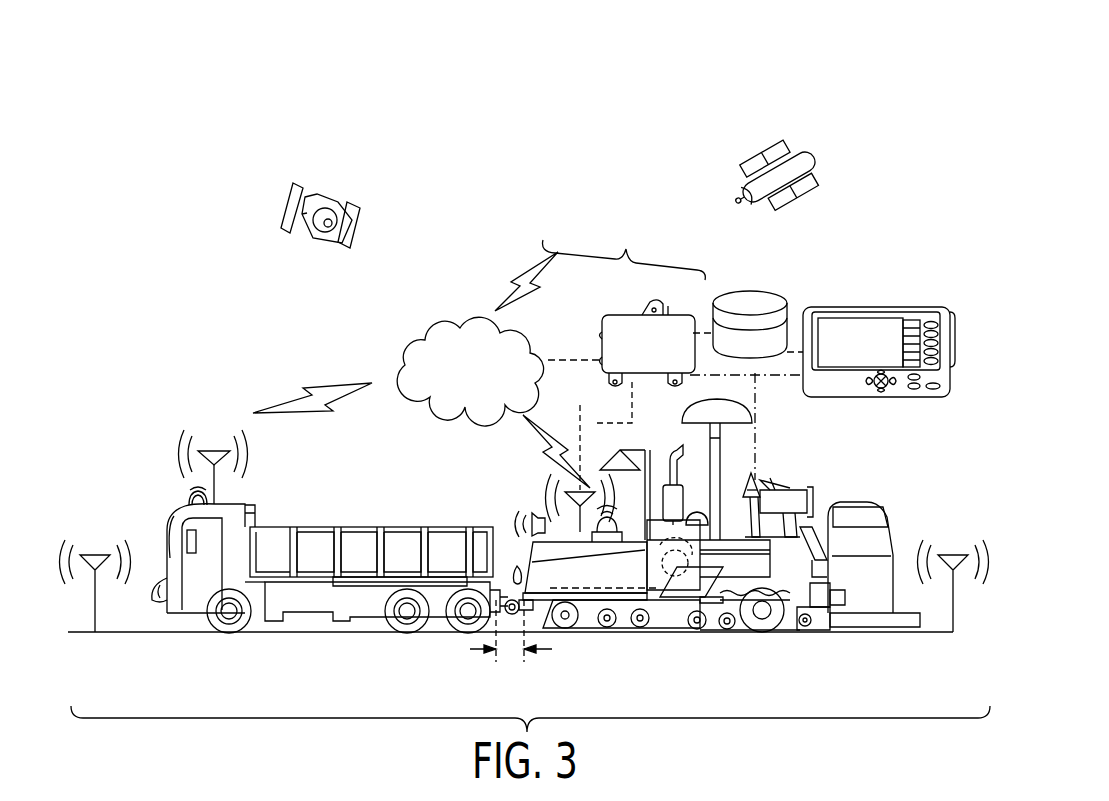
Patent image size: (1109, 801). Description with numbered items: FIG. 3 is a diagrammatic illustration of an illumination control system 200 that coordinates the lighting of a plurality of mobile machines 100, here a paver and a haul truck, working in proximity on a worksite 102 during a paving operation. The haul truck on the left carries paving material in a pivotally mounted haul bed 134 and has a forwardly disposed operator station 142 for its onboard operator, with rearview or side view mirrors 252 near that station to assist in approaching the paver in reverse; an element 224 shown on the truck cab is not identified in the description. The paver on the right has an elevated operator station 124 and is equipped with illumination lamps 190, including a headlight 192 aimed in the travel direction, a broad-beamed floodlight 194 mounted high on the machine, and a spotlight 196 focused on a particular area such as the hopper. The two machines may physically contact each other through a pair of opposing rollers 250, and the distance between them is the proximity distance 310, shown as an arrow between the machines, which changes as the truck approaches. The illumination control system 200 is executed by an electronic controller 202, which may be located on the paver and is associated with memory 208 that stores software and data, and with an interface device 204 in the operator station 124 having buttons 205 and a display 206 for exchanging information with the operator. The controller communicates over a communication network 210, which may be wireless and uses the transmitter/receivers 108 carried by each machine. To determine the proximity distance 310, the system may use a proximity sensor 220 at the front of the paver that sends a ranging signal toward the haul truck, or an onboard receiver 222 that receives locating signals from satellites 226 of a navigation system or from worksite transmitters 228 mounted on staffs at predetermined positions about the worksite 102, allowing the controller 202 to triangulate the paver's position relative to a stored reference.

The mobile machines 100 is at (857, 94).
The worksite 102 is at (133, 456).
The transmitter/receiver 108 is at (213, 452).
The operator station 124 is at (790, 475).
The haul bed 134 is at (368, 525).
The operator station 142 is at (245, 510).
The illumination lamps 190 is at (665, 445).
The headlight 192 is at (158, 574).
The floodlights 194 is at (723, 398).
The spotlights 196 is at (618, 449).
The illumination control system 200 is at (768, 305).
The electronic controller 202 is at (632, 332).
The interface device 204 is at (880, 307).
The buttons 205 is at (953, 344).
The display 206 is at (845, 354).
The memory 208 is at (741, 308).
The communication network 210 is at (462, 323).
The proximity sensor 220 is at (540, 514).
The onboard receiver 222 is at (615, 510).
The beacon light 224 is at (192, 497).
The satellites 226 is at (355, 212).
The worksite transmitters 228 is at (95, 548).
The rollers 250 is at (510, 600).
The mirrors 252 is at (182, 525).
The proximity distance 310 is at (510, 645).